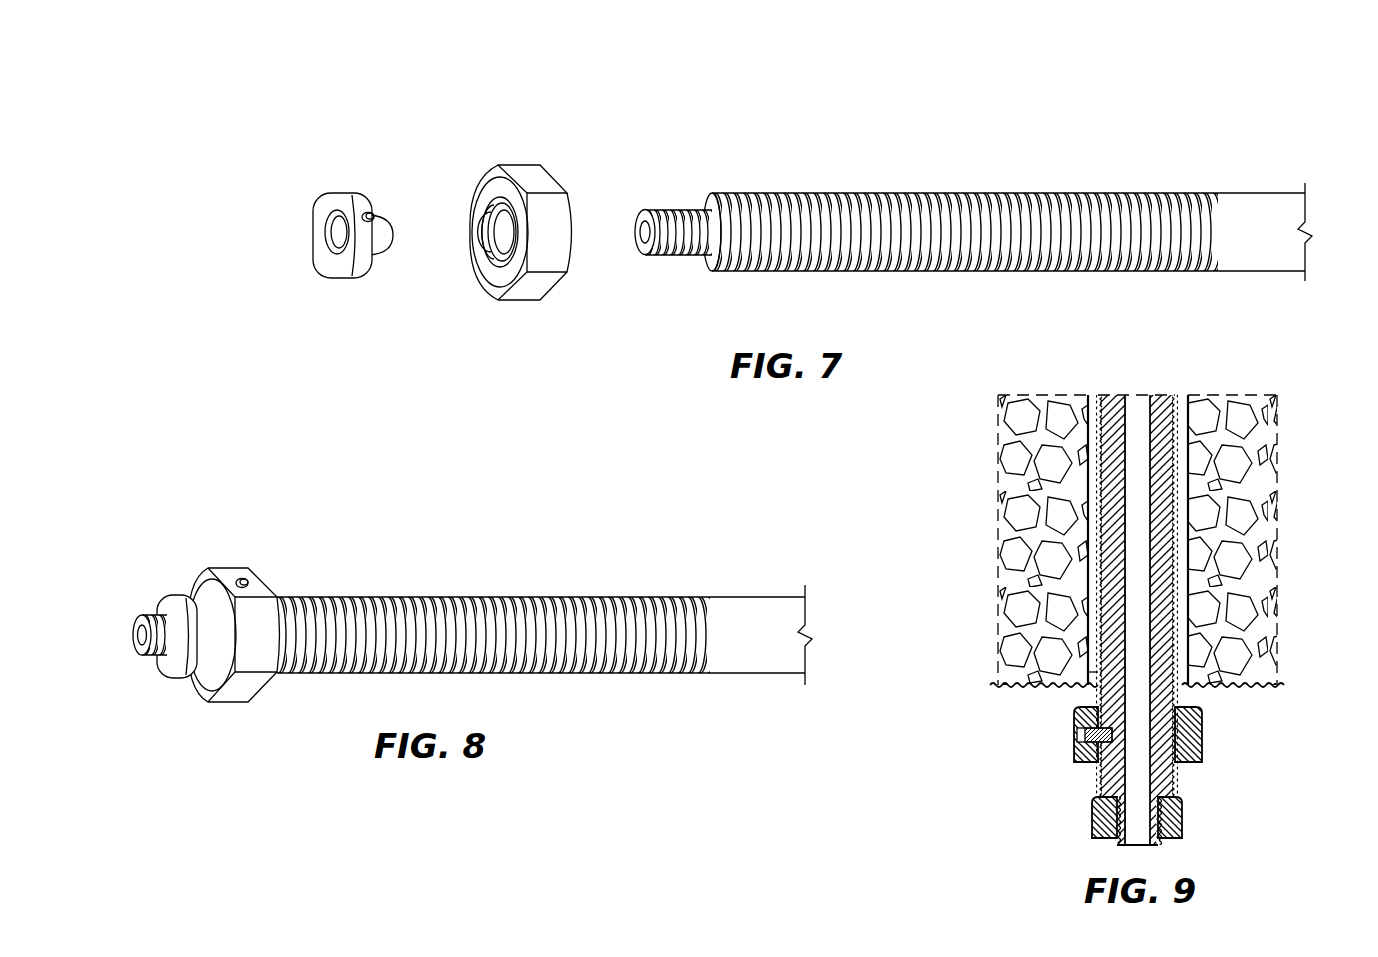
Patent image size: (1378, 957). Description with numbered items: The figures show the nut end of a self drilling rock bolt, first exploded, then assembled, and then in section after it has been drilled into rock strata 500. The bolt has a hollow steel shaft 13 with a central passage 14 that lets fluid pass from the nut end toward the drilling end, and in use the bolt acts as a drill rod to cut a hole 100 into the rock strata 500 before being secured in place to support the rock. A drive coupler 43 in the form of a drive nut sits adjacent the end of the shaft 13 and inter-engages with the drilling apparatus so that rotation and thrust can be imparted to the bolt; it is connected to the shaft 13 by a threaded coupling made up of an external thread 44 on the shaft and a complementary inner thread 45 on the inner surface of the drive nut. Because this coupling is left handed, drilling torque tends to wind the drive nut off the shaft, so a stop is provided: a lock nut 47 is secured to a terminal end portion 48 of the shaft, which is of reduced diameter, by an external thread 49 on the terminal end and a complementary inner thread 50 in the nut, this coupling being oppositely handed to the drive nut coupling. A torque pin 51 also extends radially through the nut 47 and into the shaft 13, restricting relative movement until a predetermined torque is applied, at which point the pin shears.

In FIG. 7, the shaft 13 is at (938, 199).
In FIG. 8, the shaft 13 is at (540, 567).
In FIG. 9, the shaft 13 is at (1205, 582).
In FIG. 9, the central passage 14 is at (1135, 403).
In FIG. 7, the drive coupler 43 is at (520, 217).
In FIG. 8, the drive coupler 43 is at (265, 567).
In FIG. 9, the drive coupler 43 is at (1088, 776).
In FIG. 7, the external thread 44 is at (950, 190).
In FIG. 7, the inner thread 45 is at (492, 258).
In FIG. 7, the lock nut 47 is at (354, 174).
In FIG. 8, the lock nut 47 is at (170, 590).
In FIG. 9, the lock nut 47 is at (1105, 816).
In FIG. 7, the terminal end portion 48 is at (678, 240).
In FIG. 7, the external thread 49 is at (668, 214).
In FIG. 7, the inner thread 50 is at (336, 238).
In FIG. 7, the torque pin 51 is at (363, 215).
In FIG. 9, the torque pin 51 is at (1100, 743).
In FIG. 9, the hole 100 is at (1095, 673).
In FIG. 9, the rock strata 500 is at (1256, 573).